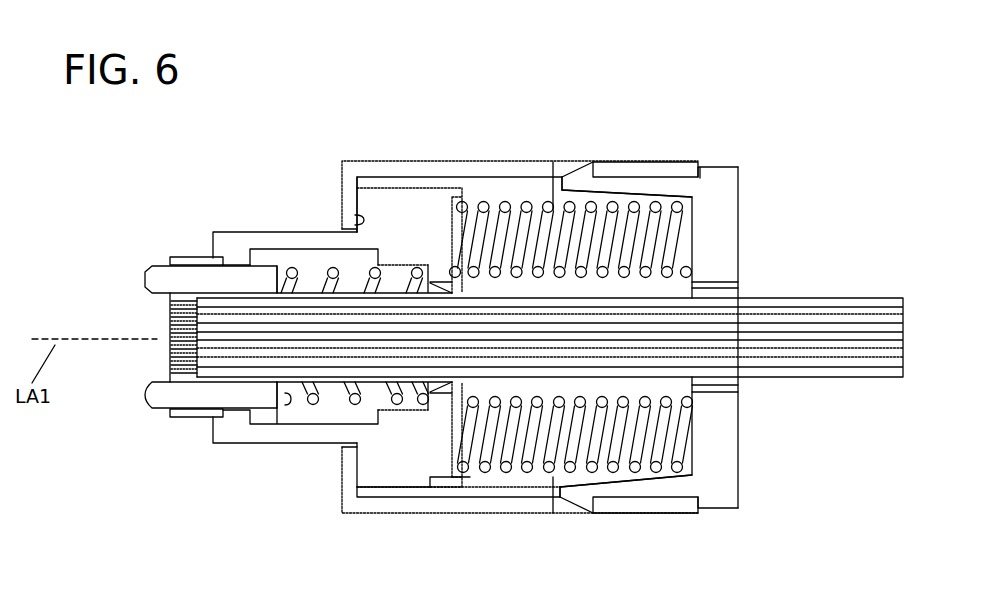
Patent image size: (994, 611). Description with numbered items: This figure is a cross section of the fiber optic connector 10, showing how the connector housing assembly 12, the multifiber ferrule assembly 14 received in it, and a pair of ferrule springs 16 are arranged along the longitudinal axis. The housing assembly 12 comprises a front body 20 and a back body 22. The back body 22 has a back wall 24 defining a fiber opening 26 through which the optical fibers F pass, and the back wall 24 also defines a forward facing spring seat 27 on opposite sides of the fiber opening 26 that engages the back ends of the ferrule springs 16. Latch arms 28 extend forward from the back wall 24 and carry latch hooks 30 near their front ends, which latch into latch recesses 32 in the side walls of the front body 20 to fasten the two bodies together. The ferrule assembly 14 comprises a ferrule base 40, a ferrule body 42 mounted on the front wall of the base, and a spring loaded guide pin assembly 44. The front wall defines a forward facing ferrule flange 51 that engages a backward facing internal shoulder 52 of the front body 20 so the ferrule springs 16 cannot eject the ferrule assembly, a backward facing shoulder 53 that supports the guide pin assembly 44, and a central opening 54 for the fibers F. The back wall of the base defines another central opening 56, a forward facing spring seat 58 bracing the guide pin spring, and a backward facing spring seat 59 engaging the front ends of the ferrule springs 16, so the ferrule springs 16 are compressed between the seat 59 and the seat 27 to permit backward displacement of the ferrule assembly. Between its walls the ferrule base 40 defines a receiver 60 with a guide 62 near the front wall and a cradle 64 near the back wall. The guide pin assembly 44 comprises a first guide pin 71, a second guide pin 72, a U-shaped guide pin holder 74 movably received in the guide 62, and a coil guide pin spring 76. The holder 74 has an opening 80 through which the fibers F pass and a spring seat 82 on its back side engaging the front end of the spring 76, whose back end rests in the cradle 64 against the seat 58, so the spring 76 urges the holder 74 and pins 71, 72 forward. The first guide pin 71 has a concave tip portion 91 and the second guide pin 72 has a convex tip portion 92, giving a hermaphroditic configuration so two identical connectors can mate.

The fiber optic connector 10 is at (831, 146).
The connector housing assembly 12 is at (706, 153).
The multifiber ferrule assembly 14 is at (181, 434).
The ferrule springs 16 is at (527, 204).
The front body 20 is at (436, 516).
The back body 22 is at (727, 511).
The back wall 24 is at (724, 167).
The fiber opening 26 is at (722, 383).
The forward facing spring seat 27 is at (693, 258).
The latch arms 28 is at (667, 190).
The latch hooks 30 is at (583, 178).
The latch recesses 32 is at (562, 167).
The ferrule base 40 is at (215, 449).
The ferrule body 42 is at (184, 255).
The spring loaded guide pin assembly 44 is at (303, 414).
The ferrule flange 51 is at (355, 195).
The internal shoulder 52 is at (342, 221).
The backward facing shoulder 53 is at (262, 254).
The central opening 54 is at (252, 412).
The central opening 56 is at (473, 200).
The forward facing spring seat 58 is at (425, 406).
The backward facing spring seat 59 is at (470, 468).
The receiver 60 is at (378, 247).
The guide 62 is at (316, 423).
The cradle 64 is at (408, 407).
The first guide pin 71 is at (150, 267).
The second guide pin 72 is at (157, 411).
The guide pin holder 74 is at (270, 253).
The guide pin spring 76 is at (291, 270).
The opening 80 is at (256, 254).
The spring seat 82 is at (288, 395).
The concave tip portion 91 is at (142, 271).
The convex tip portion 92 is at (143, 398).
The optical fibers F is at (848, 302).